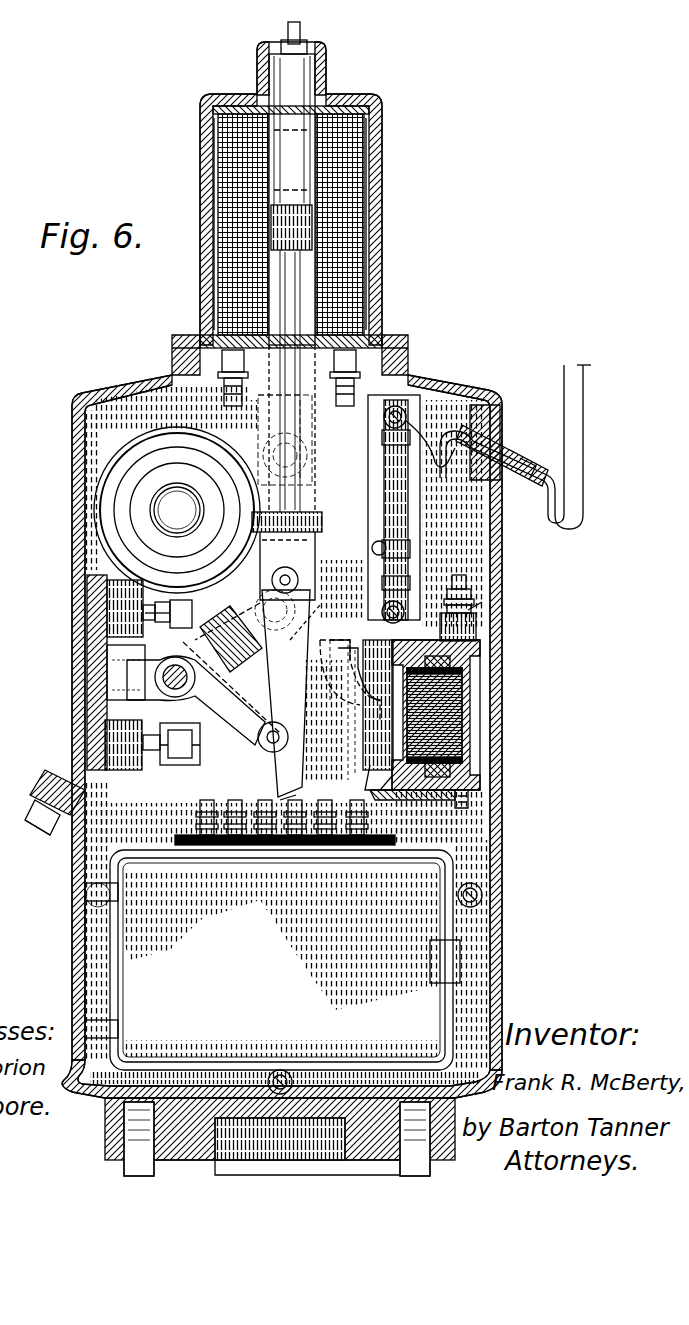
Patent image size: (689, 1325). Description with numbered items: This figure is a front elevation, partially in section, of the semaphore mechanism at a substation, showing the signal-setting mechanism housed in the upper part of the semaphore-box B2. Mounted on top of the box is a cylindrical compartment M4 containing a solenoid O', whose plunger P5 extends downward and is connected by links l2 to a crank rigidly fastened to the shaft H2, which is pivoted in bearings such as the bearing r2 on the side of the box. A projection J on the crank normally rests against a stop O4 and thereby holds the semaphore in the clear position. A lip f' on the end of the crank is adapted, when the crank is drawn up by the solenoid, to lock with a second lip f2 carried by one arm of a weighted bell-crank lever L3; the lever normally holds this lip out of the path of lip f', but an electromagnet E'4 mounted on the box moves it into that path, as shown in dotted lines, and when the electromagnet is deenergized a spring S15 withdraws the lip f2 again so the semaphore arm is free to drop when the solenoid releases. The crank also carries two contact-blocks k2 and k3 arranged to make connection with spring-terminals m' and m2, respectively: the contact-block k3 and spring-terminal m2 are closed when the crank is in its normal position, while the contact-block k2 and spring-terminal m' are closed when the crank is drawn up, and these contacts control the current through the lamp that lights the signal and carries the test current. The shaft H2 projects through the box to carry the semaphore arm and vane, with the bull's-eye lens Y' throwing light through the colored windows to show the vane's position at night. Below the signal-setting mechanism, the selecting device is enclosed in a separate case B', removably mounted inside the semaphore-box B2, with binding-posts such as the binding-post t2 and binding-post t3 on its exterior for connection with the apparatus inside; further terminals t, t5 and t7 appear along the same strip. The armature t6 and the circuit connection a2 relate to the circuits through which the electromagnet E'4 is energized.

The solenoid O' is at (316, 221).
The cylindrical compartment M4 is at (372, 264).
The plunger P5 is at (330, 292).
The bull's-eye lens Y' is at (177, 499).
The stop O4 is at (72, 650).
The spring-terminal m' is at (231, 656).
The lip f' is at (306, 684).
The second lip f2 is at (345, 640).
The semaphore-box B2 is at (480, 620).
The bearing r2 is at (149, 620).
The contact-block k2 is at (231, 639).
The projection J is at (126, 675).
The shaft H2 is at (183, 685).
The link l2 is at (298, 695).
The weighted bell-crank lever L3 is at (365, 738).
The spring S15 is at (365, 762).
The electromagnet E'4 is at (460, 724).
The spring-terminal m2 is at (150, 770).
The contact-block k3 is at (185, 765).
The circuit connection a2 is at (285, 802).
The terminal t7 is at (207, 817).
The armature t6 is at (238, 810).
The terminal t5 is at (271, 817).
The terminal t is at (288, 816).
The binding-post t3 is at (329, 812).
The binding-post t2 is at (366, 820).
The case B' is at (272, 960).